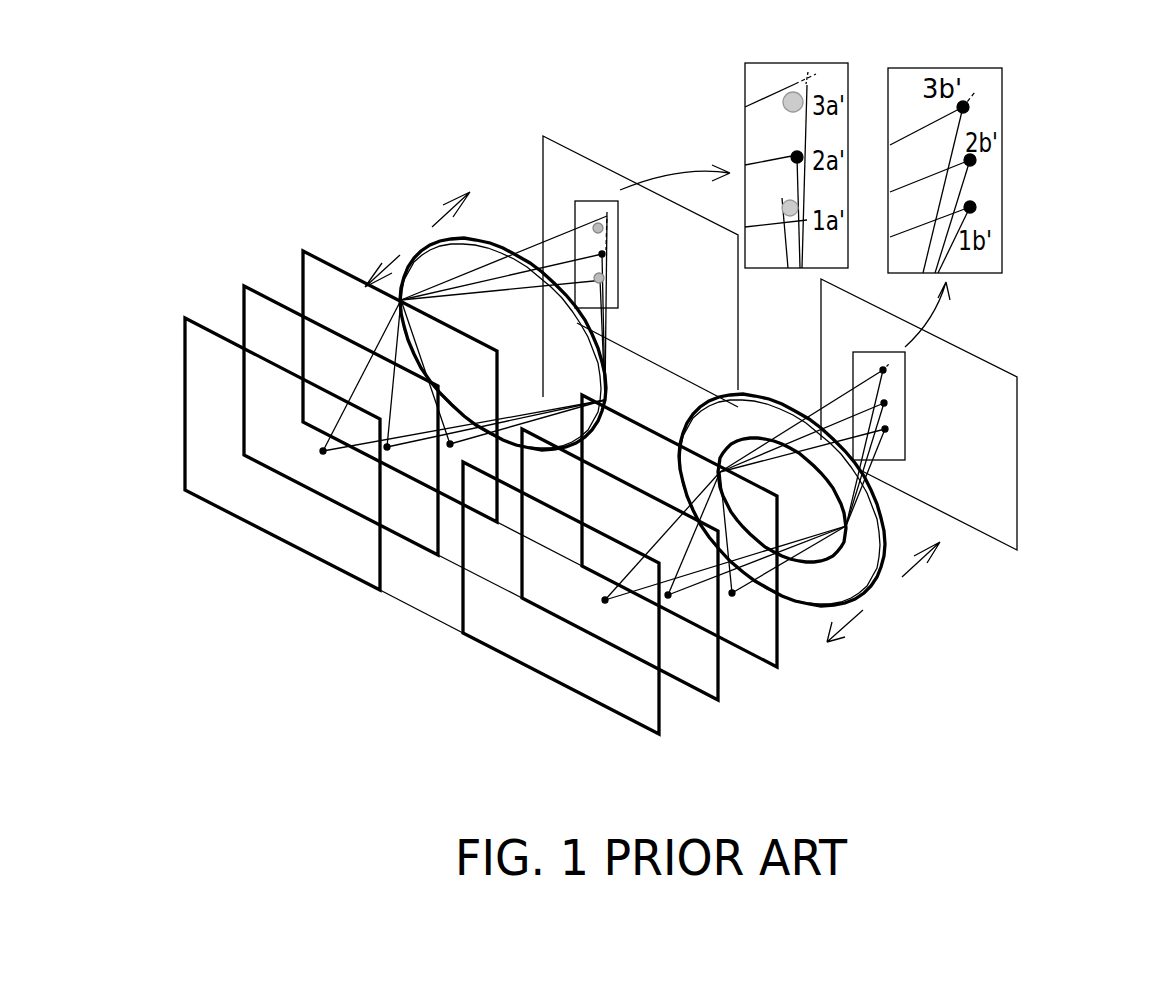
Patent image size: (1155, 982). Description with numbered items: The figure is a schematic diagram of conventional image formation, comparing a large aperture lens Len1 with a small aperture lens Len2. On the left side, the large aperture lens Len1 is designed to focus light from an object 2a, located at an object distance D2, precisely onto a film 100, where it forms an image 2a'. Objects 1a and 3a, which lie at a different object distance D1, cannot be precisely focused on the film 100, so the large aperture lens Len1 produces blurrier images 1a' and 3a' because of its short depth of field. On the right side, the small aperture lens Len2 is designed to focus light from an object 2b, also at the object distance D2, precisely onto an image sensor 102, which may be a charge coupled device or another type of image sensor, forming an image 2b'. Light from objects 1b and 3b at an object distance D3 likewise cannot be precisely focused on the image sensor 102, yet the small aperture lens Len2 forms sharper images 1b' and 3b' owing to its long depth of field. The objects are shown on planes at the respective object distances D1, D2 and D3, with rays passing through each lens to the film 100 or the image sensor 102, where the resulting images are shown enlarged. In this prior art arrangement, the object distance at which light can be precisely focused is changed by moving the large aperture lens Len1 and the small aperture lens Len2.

The film 100 is at (570, 150).
The image sensor 102 is at (1017, 463).
The large aperture lens Len1 is at (418, 267).
The small aperture lens Len2 is at (862, 575).
The object distance D1 is at (777, 667).
The object distance D2 is at (718, 700).
The object distance D3 is at (659, 734).
The object 1a is at (503, 384).
The object 2a is at (494, 386).
The object 3a is at (458, 393).
The image 1a' is at (527, 336).
The image 2a' is at (527, 321).
The image 3a' is at (527, 305).
The object 1b is at (783, 550).
The object 2b is at (755, 542).
The object 3b is at (719, 554).
The image 1b' is at (830, 470).
The image 2b' is at (830, 454).
The image 3b' is at (830, 439).